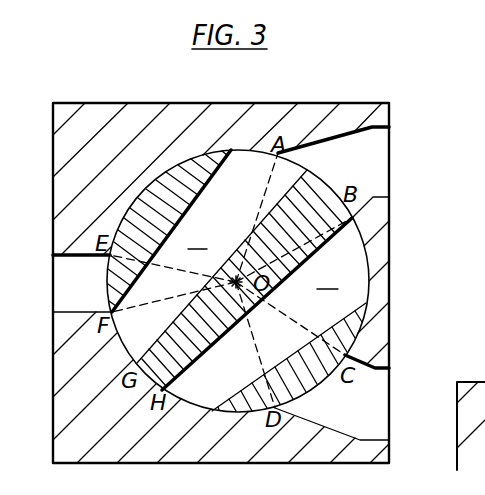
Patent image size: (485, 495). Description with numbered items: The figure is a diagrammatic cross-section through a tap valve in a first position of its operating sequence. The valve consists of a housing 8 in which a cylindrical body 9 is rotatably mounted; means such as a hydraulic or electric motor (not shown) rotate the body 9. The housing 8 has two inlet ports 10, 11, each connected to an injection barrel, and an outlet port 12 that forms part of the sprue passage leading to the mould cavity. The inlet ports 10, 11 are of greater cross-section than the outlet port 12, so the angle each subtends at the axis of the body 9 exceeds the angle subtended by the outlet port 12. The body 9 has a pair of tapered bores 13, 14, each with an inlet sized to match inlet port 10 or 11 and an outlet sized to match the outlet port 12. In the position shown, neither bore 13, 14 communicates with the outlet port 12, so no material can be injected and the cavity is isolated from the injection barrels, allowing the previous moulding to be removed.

The housing 8 is at (251, 118).
The cylindrical body 9 is at (207, 176).
The inlet port 10 is at (375, 160).
The inlet port 11 is at (373, 412).
The outlet port 12 is at (77, 292).
The bore 13 is at (194, 232).
The bore 14 is at (294, 313).